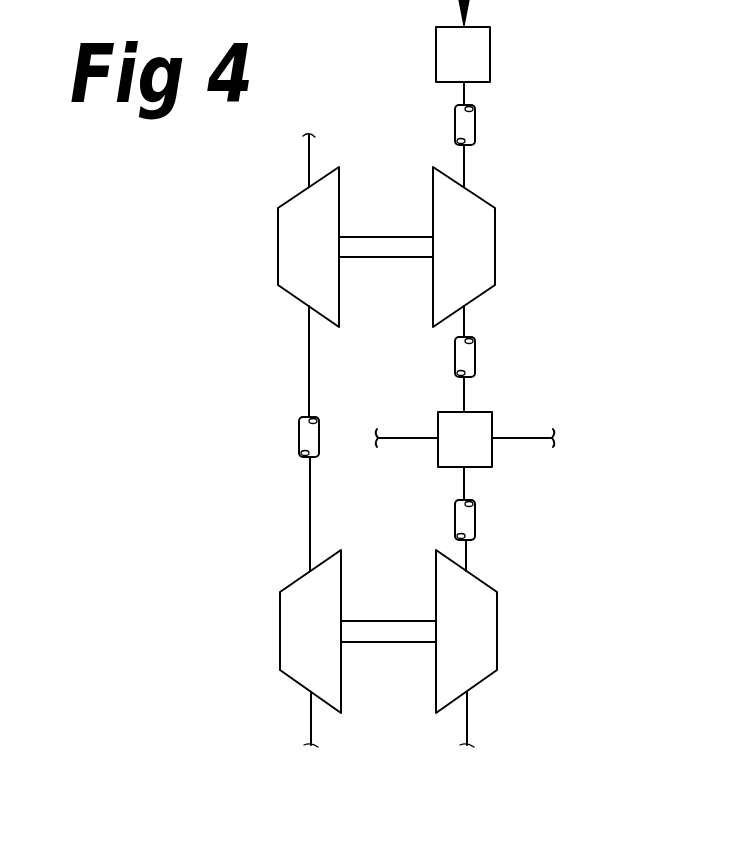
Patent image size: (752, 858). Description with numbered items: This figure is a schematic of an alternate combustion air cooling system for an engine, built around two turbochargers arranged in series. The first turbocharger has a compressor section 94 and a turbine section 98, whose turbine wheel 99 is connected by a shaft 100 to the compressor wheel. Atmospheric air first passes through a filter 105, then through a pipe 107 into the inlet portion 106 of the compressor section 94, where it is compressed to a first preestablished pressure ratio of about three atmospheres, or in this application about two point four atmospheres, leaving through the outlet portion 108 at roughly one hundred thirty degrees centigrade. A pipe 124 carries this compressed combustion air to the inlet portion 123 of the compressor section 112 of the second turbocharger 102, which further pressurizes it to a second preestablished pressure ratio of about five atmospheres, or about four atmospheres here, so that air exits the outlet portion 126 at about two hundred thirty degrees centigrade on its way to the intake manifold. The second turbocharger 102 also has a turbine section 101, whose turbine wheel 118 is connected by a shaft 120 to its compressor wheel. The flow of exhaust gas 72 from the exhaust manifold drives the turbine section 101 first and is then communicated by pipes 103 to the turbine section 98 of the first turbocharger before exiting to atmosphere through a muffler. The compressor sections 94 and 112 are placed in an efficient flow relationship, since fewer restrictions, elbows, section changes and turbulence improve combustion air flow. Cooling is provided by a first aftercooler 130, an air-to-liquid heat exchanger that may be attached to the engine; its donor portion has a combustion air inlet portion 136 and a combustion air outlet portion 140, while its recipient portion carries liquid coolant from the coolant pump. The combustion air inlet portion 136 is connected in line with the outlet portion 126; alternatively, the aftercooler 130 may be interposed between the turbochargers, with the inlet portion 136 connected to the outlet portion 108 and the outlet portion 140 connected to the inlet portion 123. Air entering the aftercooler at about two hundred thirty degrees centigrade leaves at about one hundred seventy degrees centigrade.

The flow of exhaust gas 72 is at (309, 350).
The compressor section 94 is at (516, 229).
The turbine section 98 is at (256, 231).
The turbine wheel 99 is at (290, 200).
The shaft 100 is at (386, 237).
The turbine section 101 is at (258, 646).
The second turbocharger 102 is at (280, 600).
The pipes 103 is at (299, 420).
The filter 105 is at (490, 57).
The inlet portion 106 is at (482, 199).
The pipe 107 is at (475, 125).
The outlet portion 108 is at (482, 294).
The compressor section 112 is at (516, 651).
The turbine wheel 118 is at (280, 662).
The shaft 120 is at (385, 642).
The inlet portion 123 is at (470, 573).
The pipe 124 is at (476, 352).
The outlet portion 126 is at (470, 689).
The first aftercooler 130 is at (493, 447).
The combustion air inlet portion 136 is at (470, 408).
The combustion air outlet portion 140 is at (468, 473).